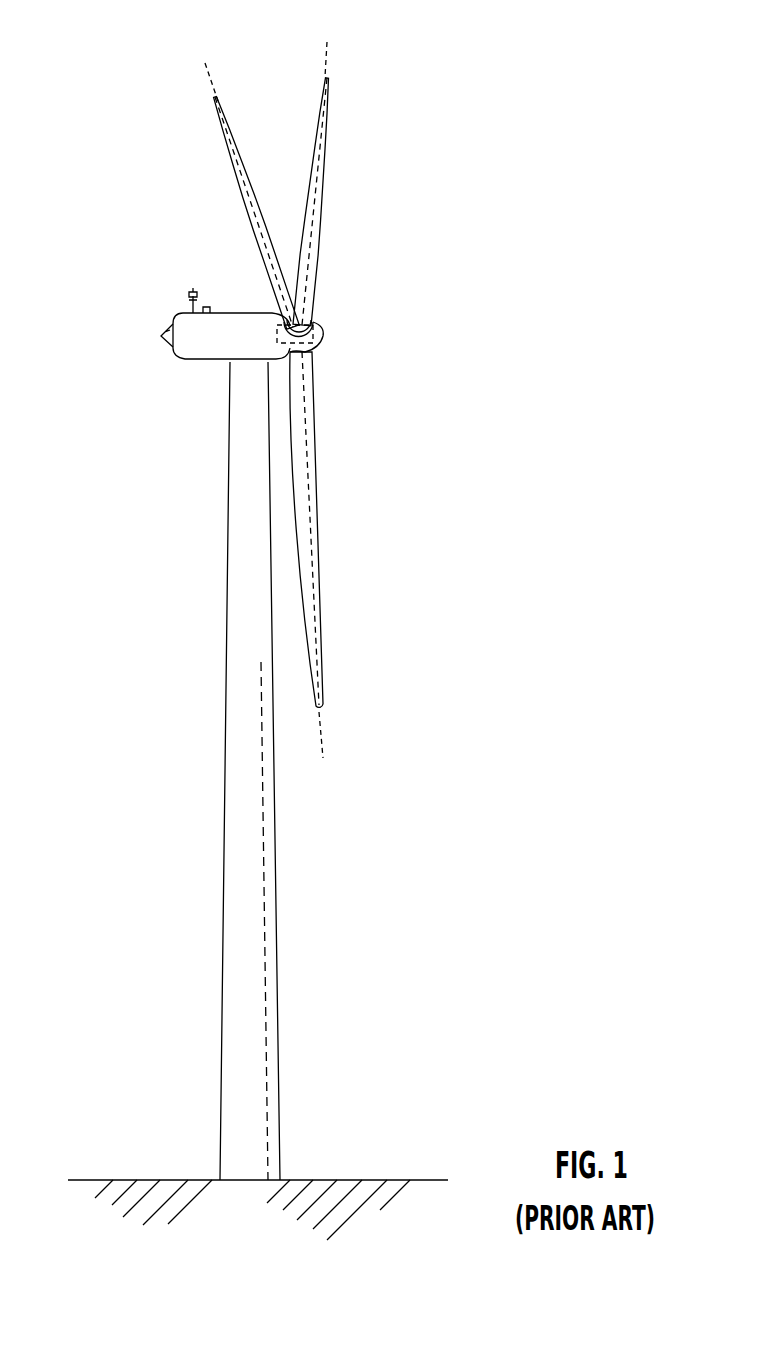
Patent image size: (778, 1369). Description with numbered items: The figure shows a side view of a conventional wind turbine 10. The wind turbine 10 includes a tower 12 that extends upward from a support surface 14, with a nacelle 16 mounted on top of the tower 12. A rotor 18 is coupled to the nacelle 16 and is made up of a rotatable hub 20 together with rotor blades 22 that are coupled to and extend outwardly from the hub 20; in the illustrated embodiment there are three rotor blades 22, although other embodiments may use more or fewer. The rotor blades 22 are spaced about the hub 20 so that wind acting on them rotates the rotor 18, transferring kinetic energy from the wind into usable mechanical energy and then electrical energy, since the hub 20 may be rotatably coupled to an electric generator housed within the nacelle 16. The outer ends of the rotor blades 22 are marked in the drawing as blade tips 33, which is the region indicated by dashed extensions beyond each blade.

The wind turbine 10 is at (412, 162).
The tower 12 is at (238, 885).
The support surface 14 is at (150, 1180).
The nacelle 16 is at (207, 360).
The rotor 18 is at (328, 309).
The rotatable hub 20 is at (317, 343).
The rotor blade 22 is at (318, 119).
The blade tip 33 is at (210, 85).